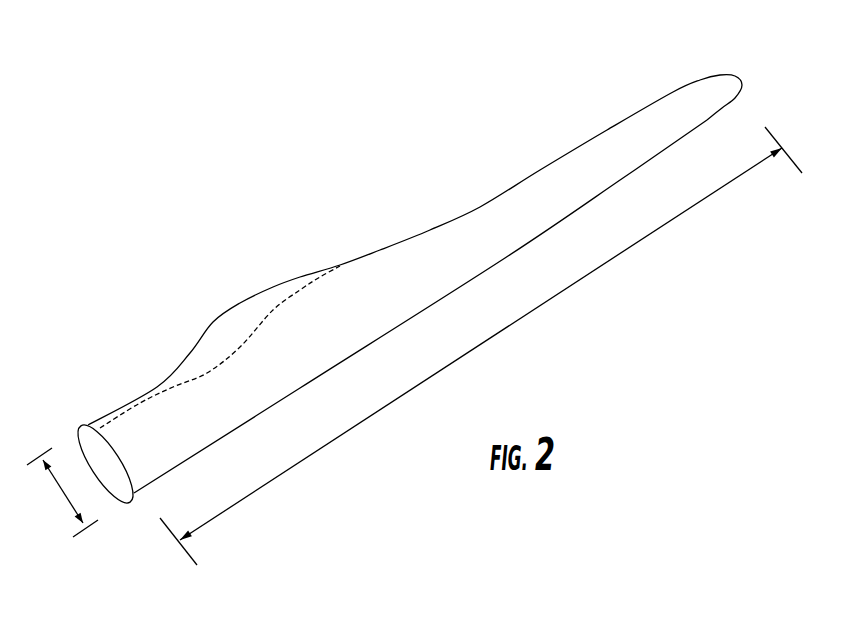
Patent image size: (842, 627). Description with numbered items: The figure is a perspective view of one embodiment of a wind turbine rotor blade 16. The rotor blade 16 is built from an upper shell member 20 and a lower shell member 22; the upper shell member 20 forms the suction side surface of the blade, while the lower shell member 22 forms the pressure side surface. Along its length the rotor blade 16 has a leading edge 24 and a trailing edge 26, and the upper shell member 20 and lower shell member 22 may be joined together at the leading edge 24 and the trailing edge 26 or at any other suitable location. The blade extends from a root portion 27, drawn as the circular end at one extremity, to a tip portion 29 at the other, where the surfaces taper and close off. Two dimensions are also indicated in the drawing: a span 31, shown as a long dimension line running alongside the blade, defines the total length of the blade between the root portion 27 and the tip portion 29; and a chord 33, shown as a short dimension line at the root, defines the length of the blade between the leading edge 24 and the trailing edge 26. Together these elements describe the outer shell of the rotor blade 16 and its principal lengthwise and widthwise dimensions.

The rotor blade 16 is at (405, 269).
The upper shell member 20 is at (257, 353).
The lower shell member 22 is at (323, 337).
The leading edge 24 is at (505, 262).
The trailing edge 26 is at (502, 192).
The root portion 27 is at (147, 420).
The tip portion 29 is at (692, 103).
The span 31 is at (523, 318).
The chord 33 is at (67, 502).